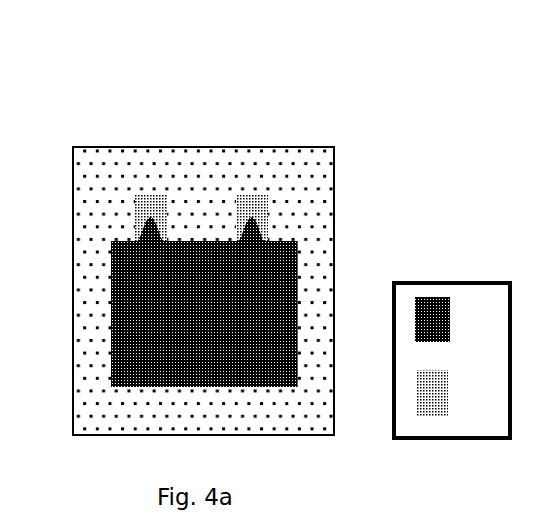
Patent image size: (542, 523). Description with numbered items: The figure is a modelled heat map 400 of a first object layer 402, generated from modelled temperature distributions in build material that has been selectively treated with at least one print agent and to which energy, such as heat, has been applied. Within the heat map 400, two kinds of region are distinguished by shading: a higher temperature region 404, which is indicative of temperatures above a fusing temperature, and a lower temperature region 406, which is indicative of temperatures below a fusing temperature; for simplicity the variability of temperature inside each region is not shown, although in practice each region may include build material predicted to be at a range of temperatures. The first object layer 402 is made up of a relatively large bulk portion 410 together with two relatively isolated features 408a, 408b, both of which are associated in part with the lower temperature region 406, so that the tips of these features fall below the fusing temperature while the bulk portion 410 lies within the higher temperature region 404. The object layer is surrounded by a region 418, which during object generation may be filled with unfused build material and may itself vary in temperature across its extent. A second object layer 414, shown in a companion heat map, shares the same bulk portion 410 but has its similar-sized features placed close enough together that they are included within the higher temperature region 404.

The heat map 400 is at (66, 57).
The first object layer 402 is at (97, 205).
The higher temperature region 404 is at (303, 314).
The lower temperature region 406 is at (315, 305).
The feature 408a is at (152, 198).
The feature 408b is at (250, 198).
The bulk portion 410 is at (297, 306).
The second object layer 414 is at (541, 147).
The region 418 is at (311, 421).